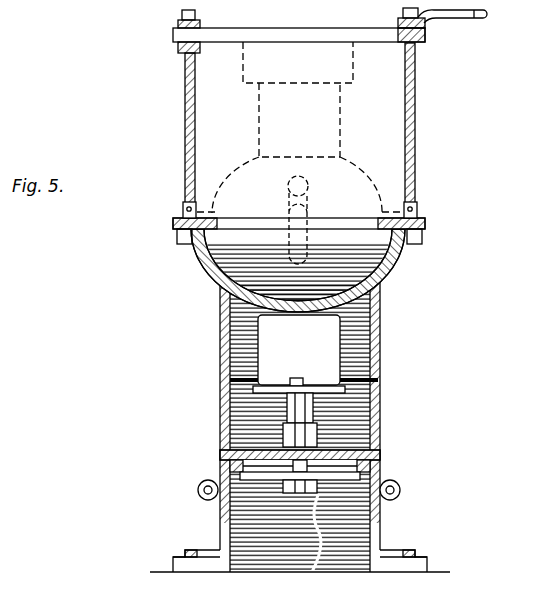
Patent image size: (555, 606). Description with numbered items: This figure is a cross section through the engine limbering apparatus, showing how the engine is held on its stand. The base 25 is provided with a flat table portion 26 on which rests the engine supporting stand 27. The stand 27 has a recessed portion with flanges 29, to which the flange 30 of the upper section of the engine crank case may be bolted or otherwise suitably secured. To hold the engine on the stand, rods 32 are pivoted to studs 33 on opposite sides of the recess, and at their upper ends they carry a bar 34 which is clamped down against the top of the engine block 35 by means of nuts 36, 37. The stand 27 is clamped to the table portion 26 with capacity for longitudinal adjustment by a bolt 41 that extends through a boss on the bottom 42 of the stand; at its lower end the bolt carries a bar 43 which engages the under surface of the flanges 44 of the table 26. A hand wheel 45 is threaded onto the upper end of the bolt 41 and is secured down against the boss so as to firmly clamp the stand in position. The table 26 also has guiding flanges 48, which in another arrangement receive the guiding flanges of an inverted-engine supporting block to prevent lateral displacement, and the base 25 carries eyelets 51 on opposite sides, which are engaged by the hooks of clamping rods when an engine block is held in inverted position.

The base 25 is at (222, 513).
The flat table portion 26 is at (229, 465).
The engine supporting stand 27 is at (223, 342).
The flanges 29 is at (198, 251).
The flange 30 is at (413, 199).
The rods 32 is at (183, 113).
The studs 33 is at (176, 222).
The bar 34 is at (299, 35).
The engine block 35 is at (260, 118).
The nut 36 is at (195, 26).
The nut 37 is at (432, 20).
The bolt 41 is at (295, 377).
The bottom of the stand 42 is at (298, 398).
The bar 43 is at (270, 478).
The flanges of the table 44 is at (325, 533).
The hand wheel 45 is at (377, 373).
The guiding flanges 48 is at (225, 457).
The eyelets 51 is at (199, 493).